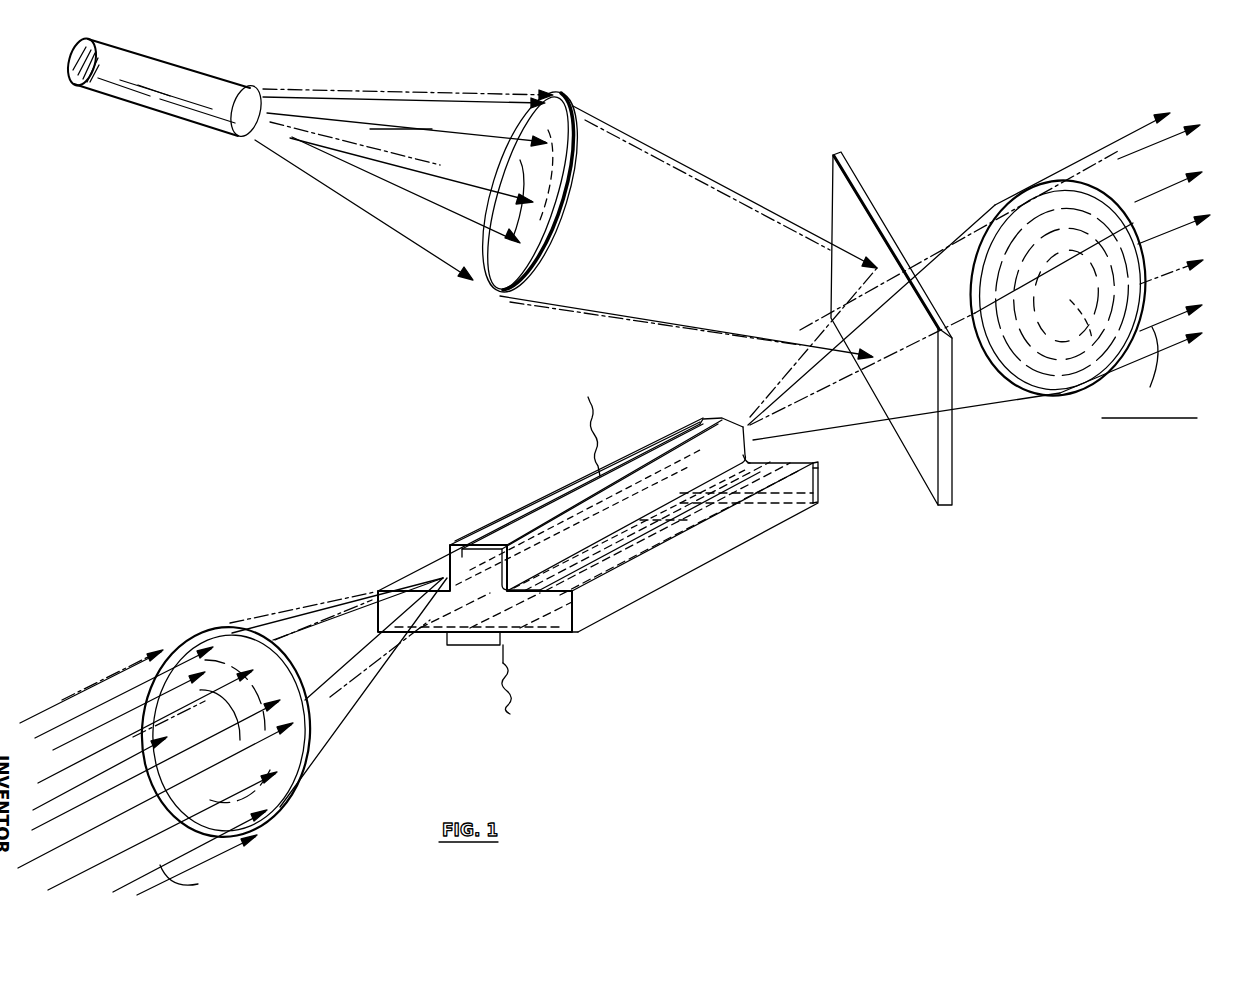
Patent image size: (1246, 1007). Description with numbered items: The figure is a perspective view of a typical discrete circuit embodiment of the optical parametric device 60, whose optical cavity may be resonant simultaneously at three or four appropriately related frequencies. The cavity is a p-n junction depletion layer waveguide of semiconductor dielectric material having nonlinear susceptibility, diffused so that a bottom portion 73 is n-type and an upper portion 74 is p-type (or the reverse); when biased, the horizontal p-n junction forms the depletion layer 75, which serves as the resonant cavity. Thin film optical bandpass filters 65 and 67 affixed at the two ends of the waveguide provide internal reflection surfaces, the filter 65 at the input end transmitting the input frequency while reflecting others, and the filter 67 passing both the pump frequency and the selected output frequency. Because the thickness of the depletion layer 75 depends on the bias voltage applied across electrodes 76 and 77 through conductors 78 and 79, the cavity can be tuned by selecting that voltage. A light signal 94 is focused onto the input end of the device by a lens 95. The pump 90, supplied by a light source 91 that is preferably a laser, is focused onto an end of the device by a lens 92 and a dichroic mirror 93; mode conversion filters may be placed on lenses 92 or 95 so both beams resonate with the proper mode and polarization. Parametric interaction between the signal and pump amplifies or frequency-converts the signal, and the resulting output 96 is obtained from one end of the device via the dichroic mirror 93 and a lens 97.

The discrete circuit optical parametric device 60 is at (616, 555).
The thin film optical bandpass filter 65 is at (573, 610).
The thin film optical bandpass filter 67 is at (818, 490).
The bottom portion 73 is at (650, 556).
The upper portion 74 is at (683, 470).
The depletion layer 75 is at (612, 512).
The electrode 76 is at (663, 458).
The electrode 77 is at (463, 646).
The conductor 78 is at (603, 440).
The conductor 79 is at (510, 688).
The light pump 90 is at (462, 178).
The light source 91 is at (155, 101).
The lens 92 is at (568, 188).
The dichroic mirror 93 is at (848, 172).
The light signal 94 is at (110, 700).
The lens 95 is at (275, 795).
The output 96 is at (1165, 238).
The lens 97 is at (1084, 352).